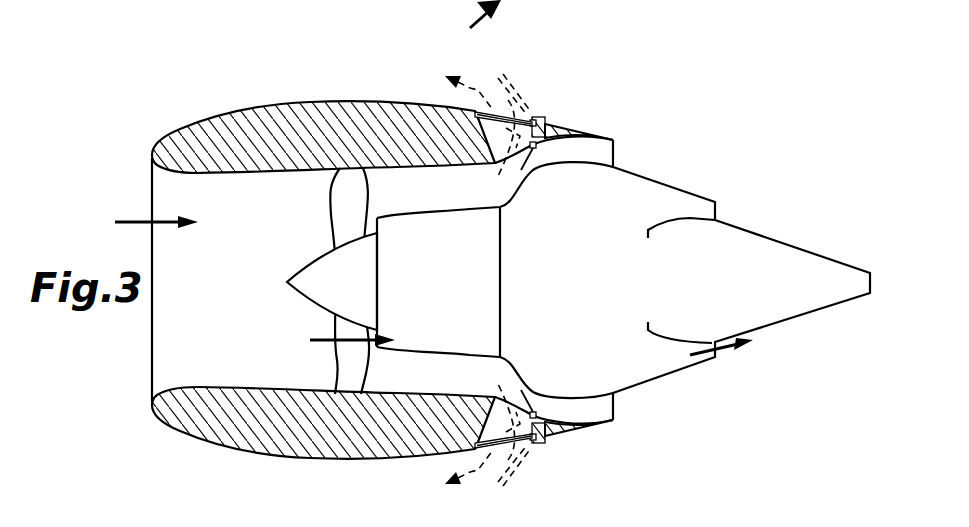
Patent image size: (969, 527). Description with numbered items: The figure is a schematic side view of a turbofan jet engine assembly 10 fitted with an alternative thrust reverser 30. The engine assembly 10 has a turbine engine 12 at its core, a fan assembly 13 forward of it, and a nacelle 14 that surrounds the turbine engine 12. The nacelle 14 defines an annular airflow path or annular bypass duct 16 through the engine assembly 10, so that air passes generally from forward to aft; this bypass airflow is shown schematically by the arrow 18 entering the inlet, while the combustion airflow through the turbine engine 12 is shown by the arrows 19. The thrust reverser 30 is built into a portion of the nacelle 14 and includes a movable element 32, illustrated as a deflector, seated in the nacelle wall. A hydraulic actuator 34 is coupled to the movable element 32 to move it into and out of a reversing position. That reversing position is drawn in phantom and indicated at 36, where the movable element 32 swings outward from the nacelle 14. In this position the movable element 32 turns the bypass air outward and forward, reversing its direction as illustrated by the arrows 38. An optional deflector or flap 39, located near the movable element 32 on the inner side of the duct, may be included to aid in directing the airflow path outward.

The turbofan jet engine assembly 10 is at (489, 248).
The turbine engine 12 is at (495, 280).
The fan assembly 13 is at (352, 188).
The nacelle 14 is at (239, 116).
The annular bypass duct 16 is at (407, 193).
The bypass airflow arrow 18 is at (131, 218).
The combustion airflow arrows 19 is at (318, 342).
The thrust reverser 30 is at (539, 113).
The movable element 32 is at (515, 120).
The hydraulic actuator 34 is at (560, 122).
The reversing position 36 is at (502, 76).
The reversed airflow arrows 38 is at (486, 92).
The deflector or flap 39 is at (525, 163).